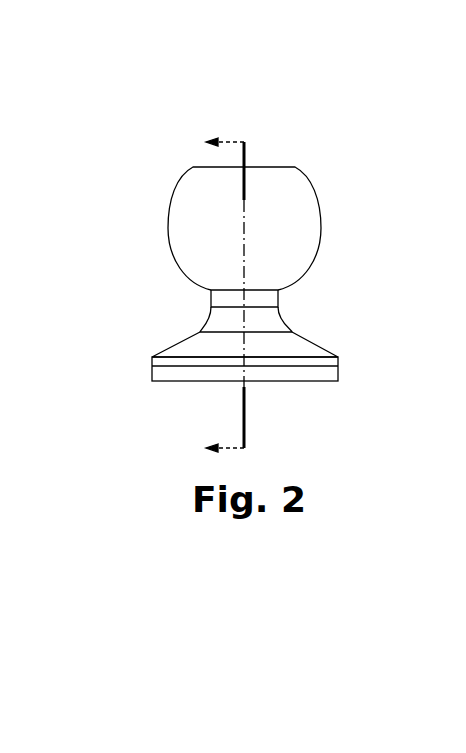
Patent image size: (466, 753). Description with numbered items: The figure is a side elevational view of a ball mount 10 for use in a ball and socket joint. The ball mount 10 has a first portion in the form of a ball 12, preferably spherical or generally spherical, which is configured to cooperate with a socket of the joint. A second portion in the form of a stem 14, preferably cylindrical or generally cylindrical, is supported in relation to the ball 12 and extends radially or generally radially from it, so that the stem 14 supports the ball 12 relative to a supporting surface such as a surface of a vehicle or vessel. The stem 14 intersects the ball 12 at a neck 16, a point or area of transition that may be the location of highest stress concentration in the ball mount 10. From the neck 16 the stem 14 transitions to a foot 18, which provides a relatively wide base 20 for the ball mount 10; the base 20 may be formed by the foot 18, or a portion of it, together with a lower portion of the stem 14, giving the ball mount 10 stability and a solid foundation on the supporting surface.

The ball mount 10 is at (146, 161).
The ball 12 is at (326, 170).
The stem 14 is at (263, 302).
The neck 16 is at (212, 296).
The foot 18 is at (188, 369).
The base 20 is at (202, 391).